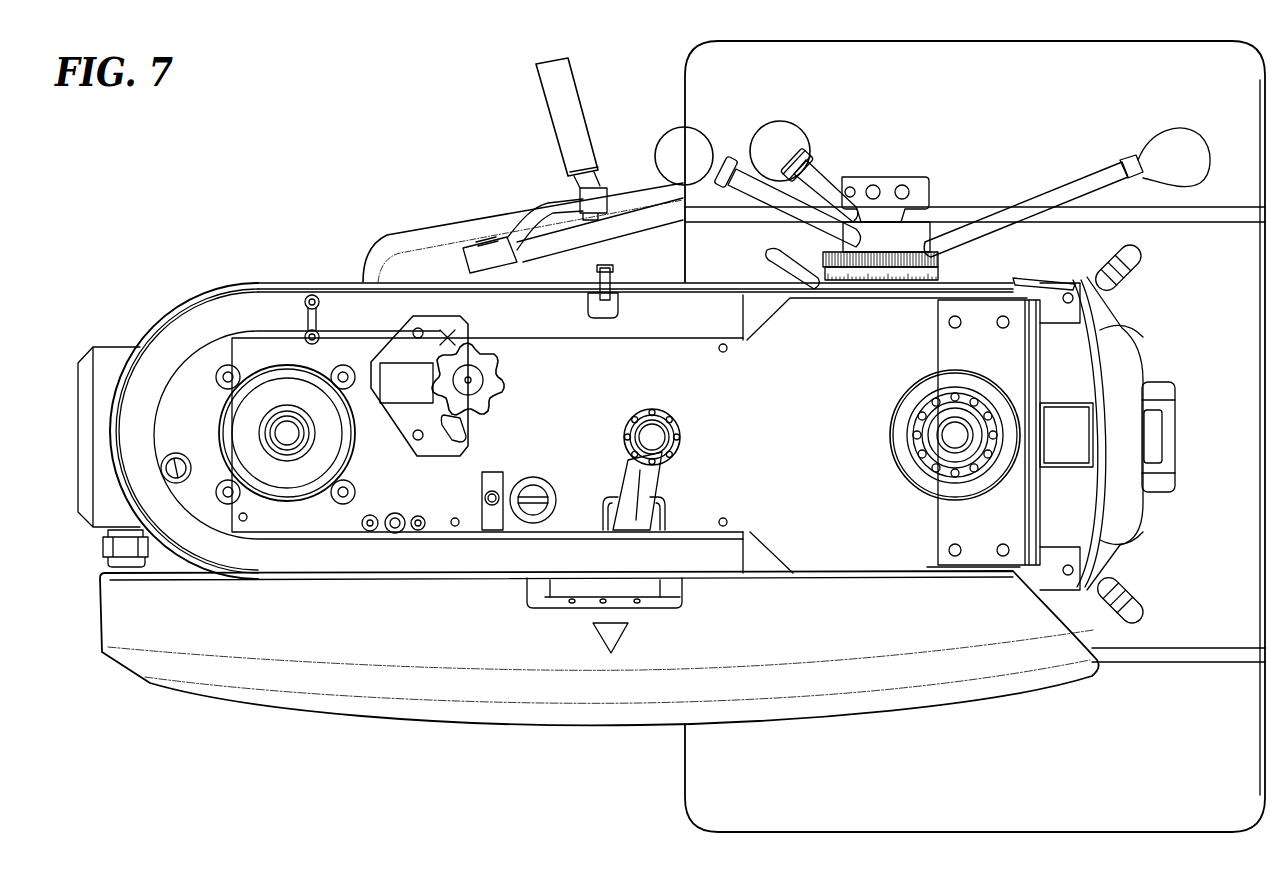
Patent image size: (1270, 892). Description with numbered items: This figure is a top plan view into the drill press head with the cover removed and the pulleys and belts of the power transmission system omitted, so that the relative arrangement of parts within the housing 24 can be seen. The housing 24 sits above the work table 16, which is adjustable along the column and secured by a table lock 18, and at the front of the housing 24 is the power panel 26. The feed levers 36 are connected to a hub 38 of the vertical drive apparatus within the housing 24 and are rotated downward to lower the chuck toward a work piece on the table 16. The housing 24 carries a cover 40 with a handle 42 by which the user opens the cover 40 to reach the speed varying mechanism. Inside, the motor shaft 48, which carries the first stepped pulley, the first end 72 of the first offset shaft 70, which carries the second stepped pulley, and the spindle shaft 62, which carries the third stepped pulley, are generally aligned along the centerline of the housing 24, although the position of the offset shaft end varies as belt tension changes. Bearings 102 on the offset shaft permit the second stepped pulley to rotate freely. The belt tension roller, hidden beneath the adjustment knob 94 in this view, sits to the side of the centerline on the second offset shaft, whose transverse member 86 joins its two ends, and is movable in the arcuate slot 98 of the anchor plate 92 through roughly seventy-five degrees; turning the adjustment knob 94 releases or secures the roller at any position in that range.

The work table 16 is at (988, 40).
The table lock 18 is at (558, 114).
The housing 24 is at (197, 300).
The power panel 26 is at (1158, 482).
The feed lever 36 is at (738, 182).
The hub 38 is at (922, 230).
The cover 40 is at (373, 697).
The handle 42 is at (552, 600).
The motor shaft 48 is at (273, 413).
The spindle shaft 62 is at (950, 440).
The first offset shaft 70 is at (633, 510).
The first end of the first offset shaft 72 is at (660, 440).
The transverse member 86 is at (410, 387).
The anchor plate 92 is at (403, 342).
The adjustment knob 94 is at (468, 362).
The arcuate slot 98 is at (450, 433).
The bearings 102 is at (683, 422).